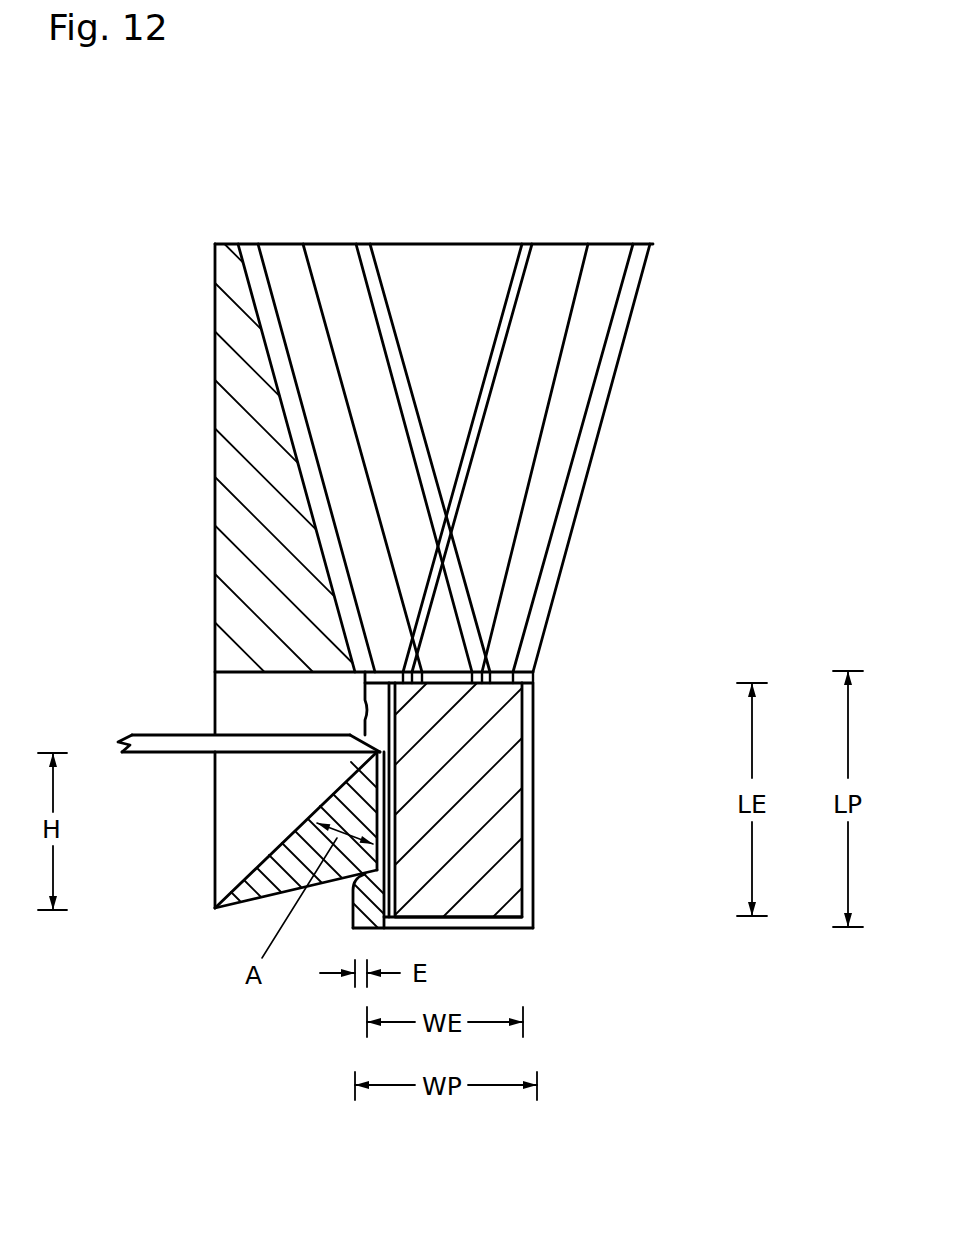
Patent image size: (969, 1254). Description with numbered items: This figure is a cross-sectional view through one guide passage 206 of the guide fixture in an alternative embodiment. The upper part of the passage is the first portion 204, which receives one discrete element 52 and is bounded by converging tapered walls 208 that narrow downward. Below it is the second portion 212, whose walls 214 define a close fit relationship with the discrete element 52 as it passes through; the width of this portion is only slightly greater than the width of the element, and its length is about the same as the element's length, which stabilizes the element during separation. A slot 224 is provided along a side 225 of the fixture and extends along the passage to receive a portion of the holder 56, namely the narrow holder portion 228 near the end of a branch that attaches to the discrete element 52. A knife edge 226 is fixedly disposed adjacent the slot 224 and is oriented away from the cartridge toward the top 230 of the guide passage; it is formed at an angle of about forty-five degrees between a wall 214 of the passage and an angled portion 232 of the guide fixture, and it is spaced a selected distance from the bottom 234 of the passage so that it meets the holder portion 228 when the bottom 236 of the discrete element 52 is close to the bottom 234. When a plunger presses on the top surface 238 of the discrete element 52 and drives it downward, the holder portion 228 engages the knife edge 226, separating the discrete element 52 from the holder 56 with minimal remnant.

The discrete element 52 is at (525, 713).
The holder 56 is at (138, 703).
The first portion of guide passage 204 is at (648, 382).
The guide passage 206 is at (455, 292).
The converging tapered walls 208 is at (610, 263).
The second portion of guide passage 212 is at (567, 808).
The walls of second portion 214 is at (535, 680).
The slot 224 is at (287, 441).
The side of guide fixture 225 is at (213, 353).
The knife edge 226 is at (377, 752).
The holder portion 228 is at (367, 713).
The top of guide passage 230 is at (405, 244).
The angled portion of guide fixture 232 is at (265, 857).
The bottom of guide passage 234 is at (505, 928).
The bottom of discrete element 236 is at (520, 905).
The top surface of discrete element 238 is at (503, 672).